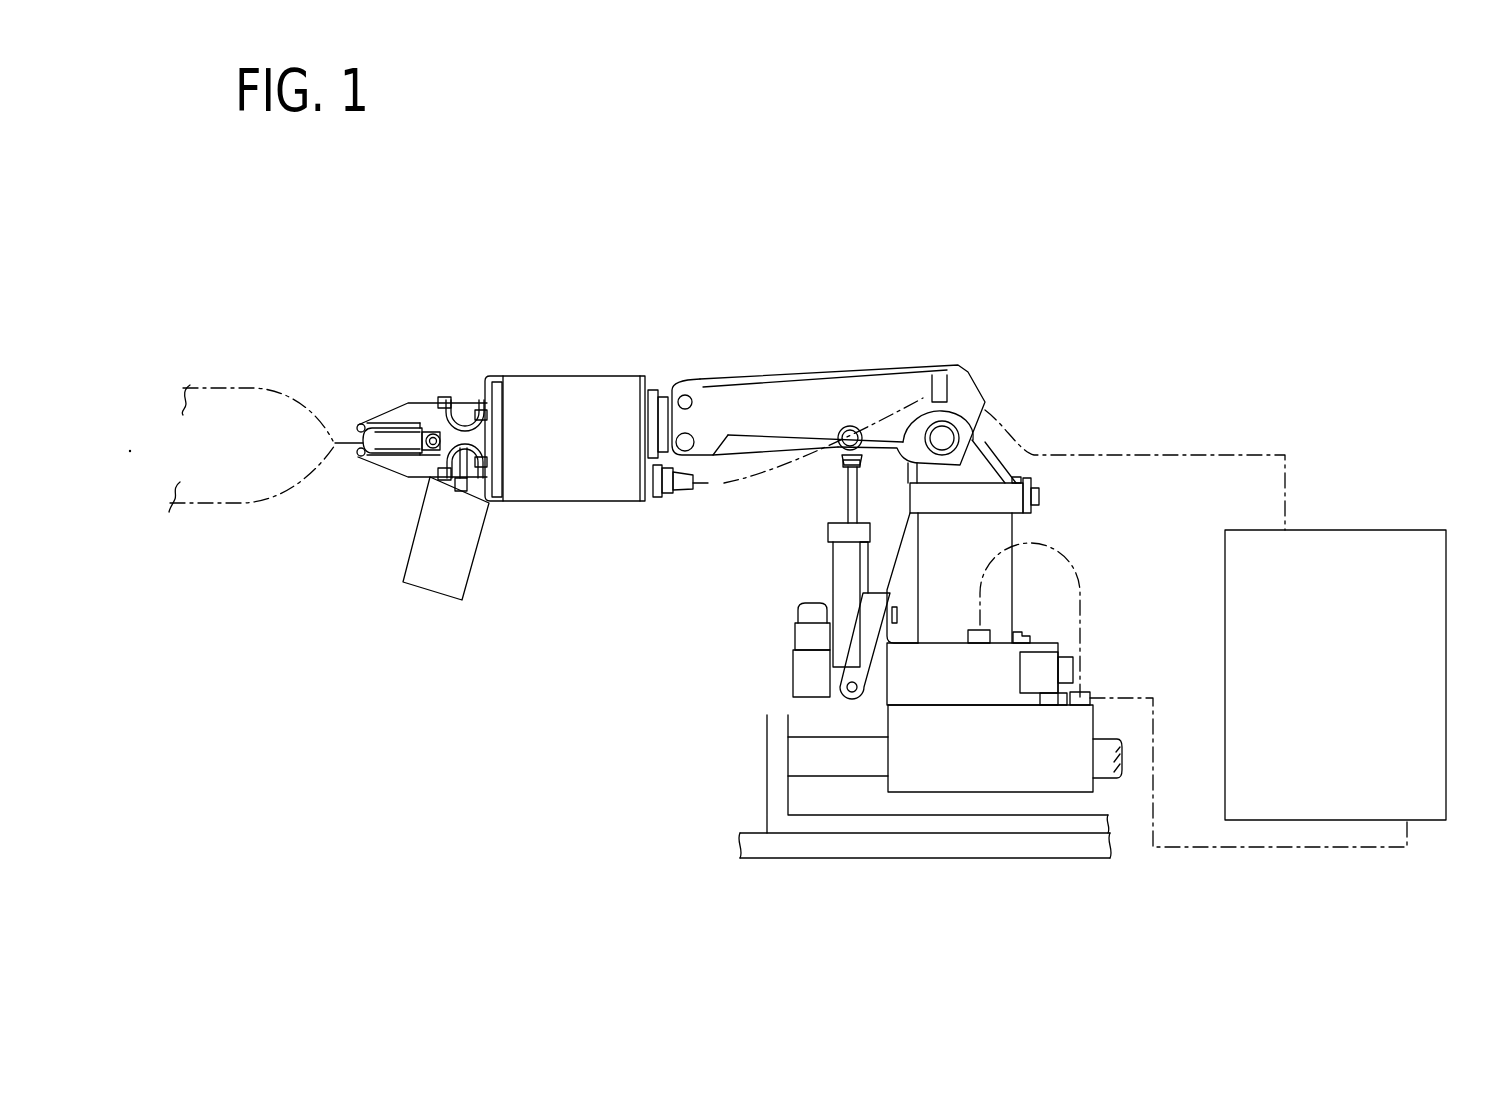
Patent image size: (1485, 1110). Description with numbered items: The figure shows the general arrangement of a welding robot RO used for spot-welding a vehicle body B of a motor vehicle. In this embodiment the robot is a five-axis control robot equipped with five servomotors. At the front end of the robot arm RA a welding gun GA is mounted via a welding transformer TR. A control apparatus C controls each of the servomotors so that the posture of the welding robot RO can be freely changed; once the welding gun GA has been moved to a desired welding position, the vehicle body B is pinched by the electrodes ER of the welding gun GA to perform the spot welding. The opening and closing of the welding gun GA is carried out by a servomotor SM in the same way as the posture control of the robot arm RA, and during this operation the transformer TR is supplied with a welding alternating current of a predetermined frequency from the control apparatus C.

The vehicle body B is at (231, 388).
The electrodes ER is at (368, 420).
The welding gun GA is at (417, 393).
The welding transformer TR is at (583, 385).
The robot arm RA is at (733, 400).
The welding robot RO is at (982, 377).
The servomotor SM is at (462, 561).
The control apparatus C is at (1405, 545).